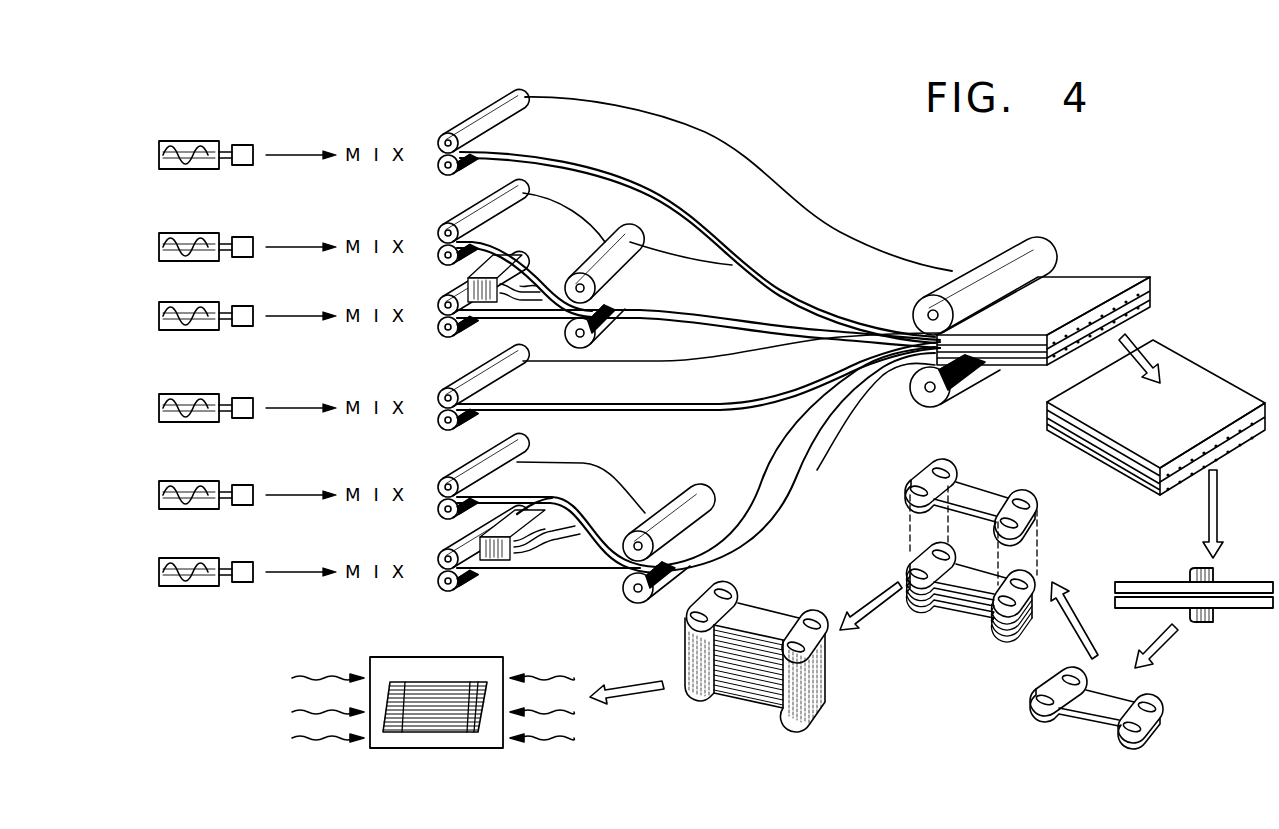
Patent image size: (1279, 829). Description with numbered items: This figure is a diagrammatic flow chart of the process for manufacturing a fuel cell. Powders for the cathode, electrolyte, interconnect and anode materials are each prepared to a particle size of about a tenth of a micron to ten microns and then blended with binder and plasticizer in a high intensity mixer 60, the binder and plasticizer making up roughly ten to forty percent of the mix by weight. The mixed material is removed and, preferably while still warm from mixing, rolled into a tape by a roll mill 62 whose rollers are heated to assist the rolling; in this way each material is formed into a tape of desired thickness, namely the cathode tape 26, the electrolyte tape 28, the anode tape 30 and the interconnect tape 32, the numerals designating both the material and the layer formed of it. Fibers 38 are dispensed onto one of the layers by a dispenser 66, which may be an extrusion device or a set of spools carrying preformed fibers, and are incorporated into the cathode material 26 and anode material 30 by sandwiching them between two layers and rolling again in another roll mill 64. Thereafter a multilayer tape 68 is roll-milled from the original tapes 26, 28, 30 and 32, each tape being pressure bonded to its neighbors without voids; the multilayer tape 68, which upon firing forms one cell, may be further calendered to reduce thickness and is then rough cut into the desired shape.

The cathode material tape 26 is at (808, 468).
The electrolyte material tape 28 is at (683, 377).
The anode material tape 30 is at (651, 292).
The interconnect material tape 32 is at (768, 193).
The fibers 38 is at (536, 298).
The high intensity mixer 60 is at (176, 140).
The roll mill 62 is at (491, 112).
The roll mill 64 is at (618, 240).
The dispenser 66 is at (492, 268).
The multilayer tape 68 is at (1060, 307).